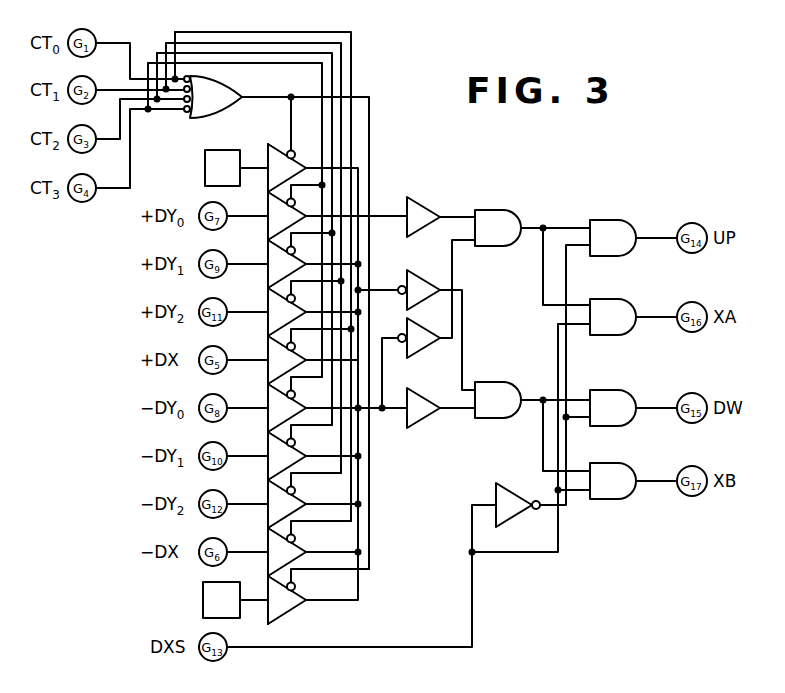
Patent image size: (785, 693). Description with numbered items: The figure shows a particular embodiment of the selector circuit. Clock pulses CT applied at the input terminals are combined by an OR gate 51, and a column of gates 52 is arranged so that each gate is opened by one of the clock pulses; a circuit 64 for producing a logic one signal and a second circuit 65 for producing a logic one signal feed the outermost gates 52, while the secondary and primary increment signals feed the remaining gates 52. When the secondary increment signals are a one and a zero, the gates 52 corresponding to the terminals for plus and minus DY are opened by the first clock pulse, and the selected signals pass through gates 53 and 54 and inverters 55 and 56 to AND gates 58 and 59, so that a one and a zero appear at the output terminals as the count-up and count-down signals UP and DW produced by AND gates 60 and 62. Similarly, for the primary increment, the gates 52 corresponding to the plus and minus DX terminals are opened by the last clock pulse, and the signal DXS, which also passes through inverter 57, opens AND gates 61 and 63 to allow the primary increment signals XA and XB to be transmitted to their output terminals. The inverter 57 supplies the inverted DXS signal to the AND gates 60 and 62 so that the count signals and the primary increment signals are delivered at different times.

The OR gate 51 is at (233, 80).
The gate 52 is at (288, 614).
The gate 53 is at (416, 204).
The gate 54 is at (421, 421).
The inverter 55 is at (423, 279).
The inverter 56 is at (421, 351).
The inverter 57 is at (512, 492).
The AND gate 58 is at (505, 210).
The AND gate 59 is at (505, 381).
The AND gate 60 is at (628, 220).
The AND gate 61 is at (627, 299).
The AND gate 62 is at (627, 390).
The AND gate 63 is at (627, 463).
The circuit for producing signal "1" 64 is at (236, 150).
The circuit for producing signal "1" 65 is at (229, 582).